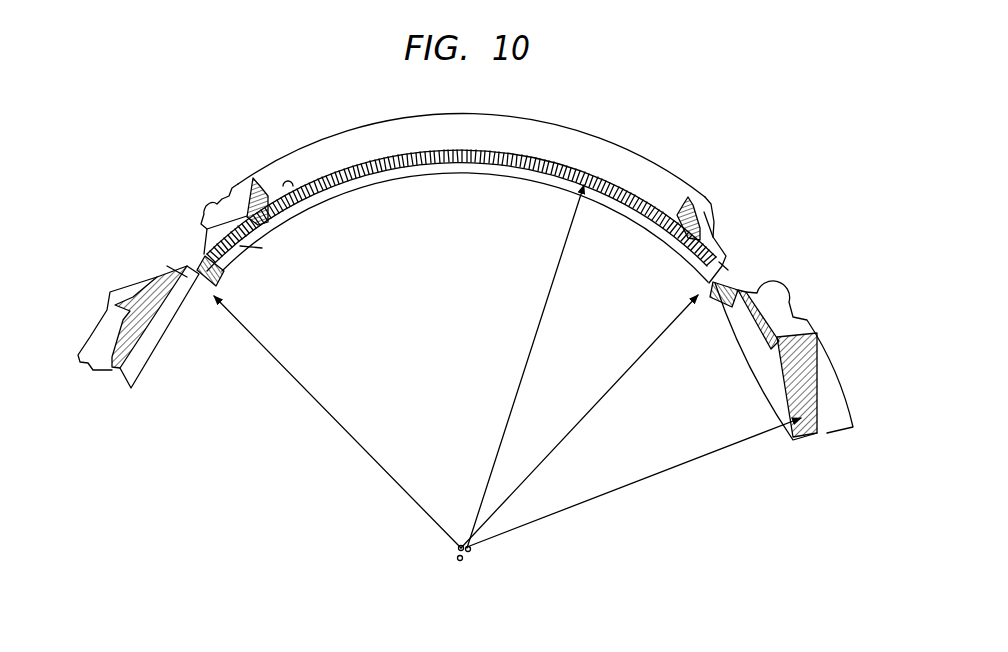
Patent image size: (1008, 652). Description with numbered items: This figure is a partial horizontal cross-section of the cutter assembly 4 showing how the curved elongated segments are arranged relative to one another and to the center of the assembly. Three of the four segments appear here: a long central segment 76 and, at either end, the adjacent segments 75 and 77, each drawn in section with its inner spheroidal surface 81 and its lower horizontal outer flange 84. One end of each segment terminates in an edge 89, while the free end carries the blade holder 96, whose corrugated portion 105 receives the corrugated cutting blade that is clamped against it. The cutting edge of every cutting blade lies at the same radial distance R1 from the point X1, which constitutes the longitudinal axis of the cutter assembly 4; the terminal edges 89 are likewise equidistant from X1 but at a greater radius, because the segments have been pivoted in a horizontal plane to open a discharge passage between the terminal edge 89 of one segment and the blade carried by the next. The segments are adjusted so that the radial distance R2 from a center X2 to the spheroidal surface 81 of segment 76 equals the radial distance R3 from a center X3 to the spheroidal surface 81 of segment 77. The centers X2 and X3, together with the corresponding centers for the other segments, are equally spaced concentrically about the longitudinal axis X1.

The cutter assembly 4 is at (265, 146).
The curved elongated segment 75 is at (122, 333).
The curved elongated segment 76 is at (504, 150).
The curved elongated segment 77 is at (825, 438).
The inner spheroidal surface 81 is at (485, 175).
The lower horizontal outer flange 84 is at (637, 163).
The terminal edge 89 is at (724, 270).
The blade holder 96 is at (262, 248).
The corrugated portion 105 is at (212, 278).
The radial distance R1 is at (318, 408).
The radial distance R2 is at (544, 328).
The radial distance R3 is at (630, 488).
The longitudinal axis X1 is at (458, 550).
The center X2 is at (471, 553).
The center X3 is at (460, 561).